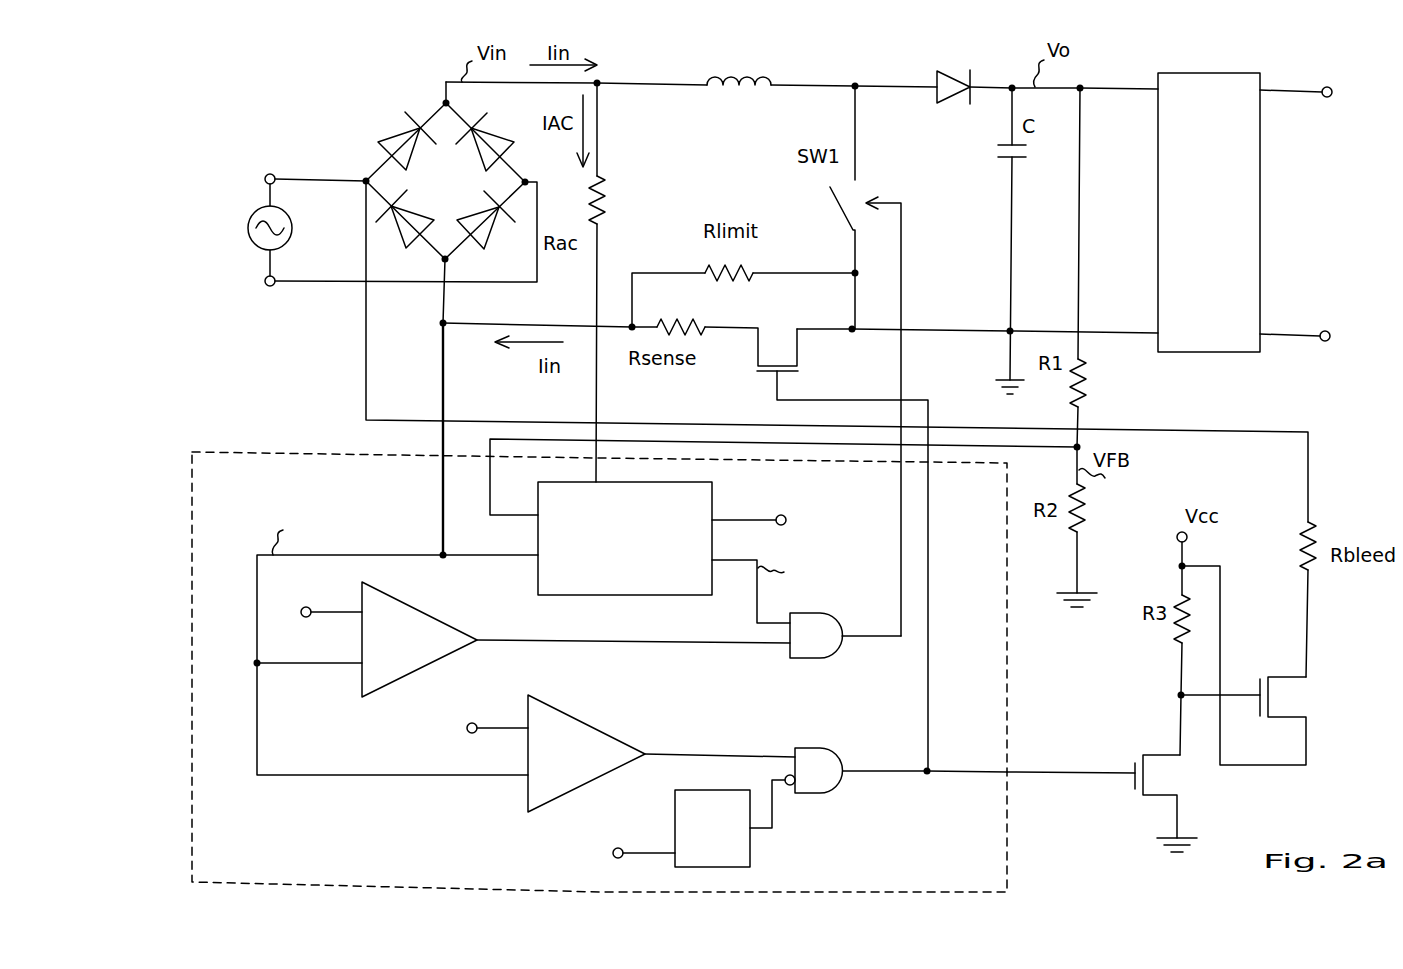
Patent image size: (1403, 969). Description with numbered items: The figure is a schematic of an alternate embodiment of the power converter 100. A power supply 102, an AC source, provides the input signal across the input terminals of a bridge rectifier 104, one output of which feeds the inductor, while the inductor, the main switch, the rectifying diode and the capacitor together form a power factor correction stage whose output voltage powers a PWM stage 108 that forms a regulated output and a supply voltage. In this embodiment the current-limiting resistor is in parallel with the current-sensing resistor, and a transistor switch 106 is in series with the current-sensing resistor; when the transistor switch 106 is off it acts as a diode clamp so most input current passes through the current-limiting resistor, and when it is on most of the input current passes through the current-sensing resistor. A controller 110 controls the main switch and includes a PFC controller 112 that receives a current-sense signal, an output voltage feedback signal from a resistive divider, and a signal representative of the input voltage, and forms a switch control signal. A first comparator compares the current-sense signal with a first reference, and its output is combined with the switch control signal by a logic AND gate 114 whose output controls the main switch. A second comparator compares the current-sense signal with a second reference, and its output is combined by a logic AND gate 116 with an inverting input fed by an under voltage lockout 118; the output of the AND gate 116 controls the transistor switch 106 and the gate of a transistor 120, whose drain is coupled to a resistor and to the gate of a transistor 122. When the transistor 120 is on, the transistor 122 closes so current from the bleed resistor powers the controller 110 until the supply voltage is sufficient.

The power converter 100 is at (360, 74).
The power supply 102 is at (292, 224).
The bridge rectifier 104 is at (467, 194).
The transistor switch 106 is at (816, 534).
The pulse-width modulation (PWM) stage 108 is at (1201, 73).
The controller 110 is at (237, 452).
The PFC controller 112 is at (695, 587).
The logic AND gate 114 is at (813, 616).
The logic AND gate 116 is at (814, 749).
The under voltage lockout (UVLO) 118 is at (735, 856).
The transistor 120 is at (1102, 788).
The transistor 122 is at (1267, 665).